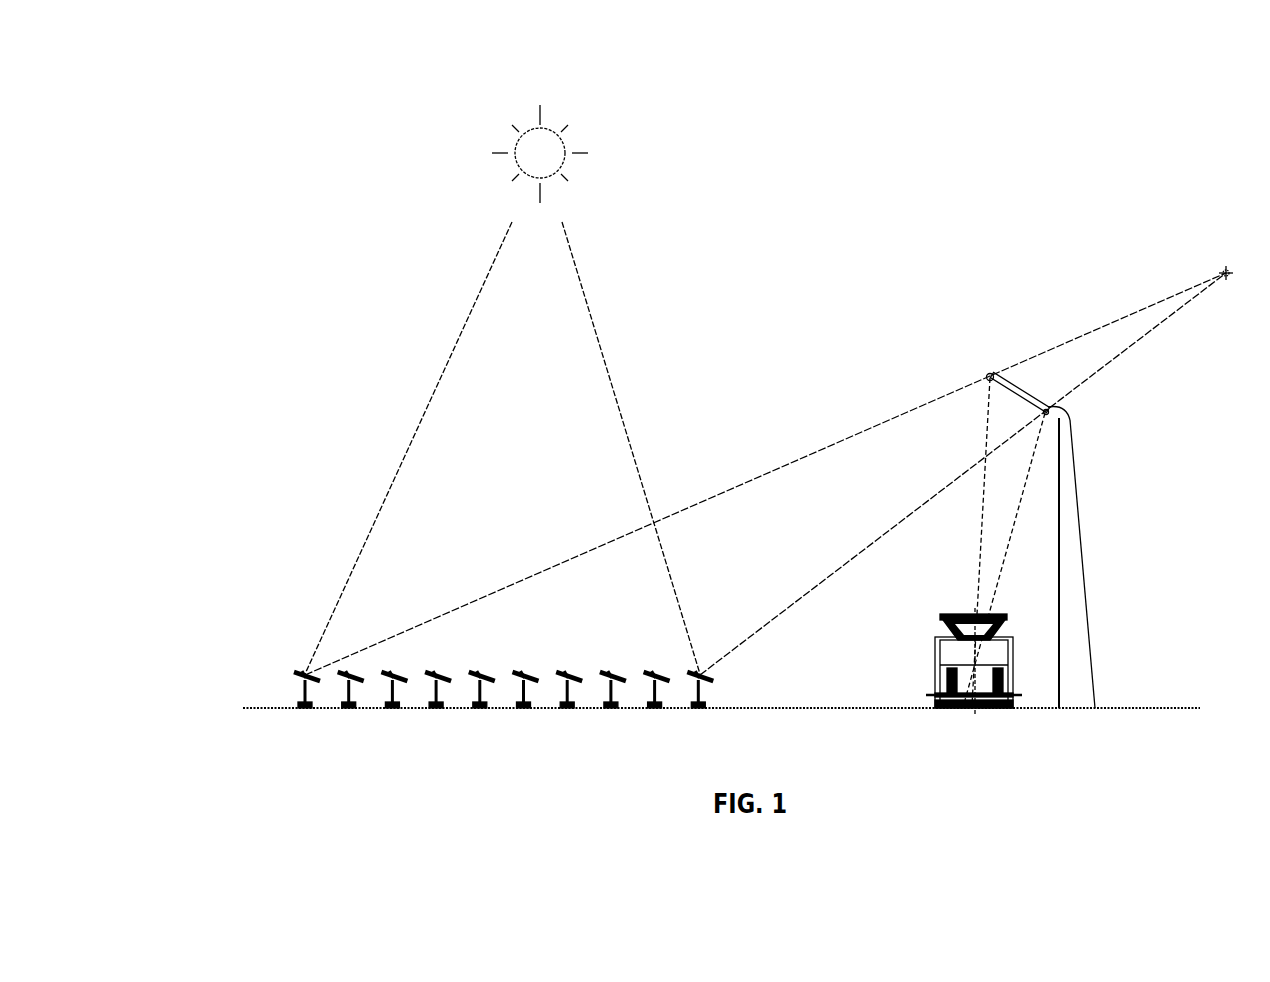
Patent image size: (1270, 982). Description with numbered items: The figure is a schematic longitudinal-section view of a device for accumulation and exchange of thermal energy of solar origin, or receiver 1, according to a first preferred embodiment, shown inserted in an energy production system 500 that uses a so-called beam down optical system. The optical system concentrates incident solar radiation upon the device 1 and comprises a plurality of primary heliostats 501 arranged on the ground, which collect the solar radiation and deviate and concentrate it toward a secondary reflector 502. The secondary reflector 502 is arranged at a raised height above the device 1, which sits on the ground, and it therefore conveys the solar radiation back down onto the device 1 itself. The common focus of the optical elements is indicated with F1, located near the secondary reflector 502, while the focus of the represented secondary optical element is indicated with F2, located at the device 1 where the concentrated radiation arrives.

The energy production system 500 is at (1167, 116).
The primary heliostats 501 is at (270, 684).
The secondary reflectors 502 is at (1037, 366).
The device for accumulation and exchange of thermal energy of solar origin 1 is at (948, 600).
The common focus of the optical elements F1 is at (1199, 267).
The focus of the secondary optical element F2 is at (996, 647).